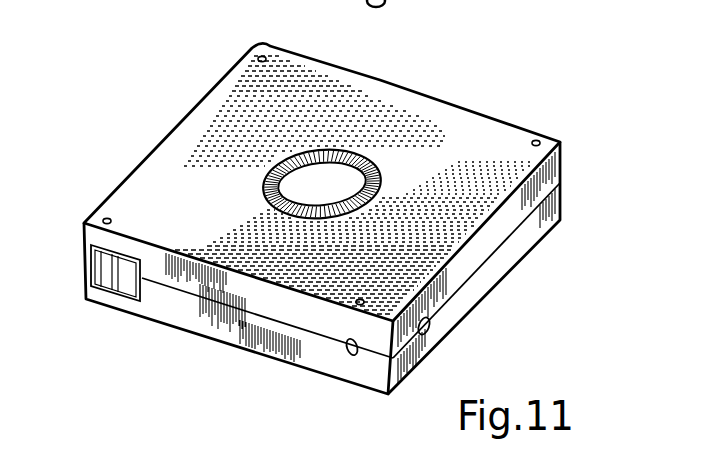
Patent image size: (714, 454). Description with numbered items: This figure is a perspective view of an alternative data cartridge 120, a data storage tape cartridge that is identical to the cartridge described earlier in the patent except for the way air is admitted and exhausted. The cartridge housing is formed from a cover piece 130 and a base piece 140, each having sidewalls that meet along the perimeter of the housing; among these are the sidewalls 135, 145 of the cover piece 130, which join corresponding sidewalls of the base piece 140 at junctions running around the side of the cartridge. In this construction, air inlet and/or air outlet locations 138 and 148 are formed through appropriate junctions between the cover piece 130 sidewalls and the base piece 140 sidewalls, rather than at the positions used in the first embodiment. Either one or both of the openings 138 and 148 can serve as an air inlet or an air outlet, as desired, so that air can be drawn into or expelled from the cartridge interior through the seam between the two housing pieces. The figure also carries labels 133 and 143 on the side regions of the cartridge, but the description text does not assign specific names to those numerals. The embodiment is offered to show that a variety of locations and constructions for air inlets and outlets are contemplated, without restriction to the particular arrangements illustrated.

The data cartridge 120 is at (543, 106).
The cover piece 130 is at (241, 336).
The base side wall 133 is at (503, 257).
The sidewall 135 is at (172, 307).
The air inlet and/or air outlet location 138 is at (340, 369).
The base piece 140 is at (439, 118).
The cover side wall (upper band) 143 is at (483, 243).
The sidewall 145 is at (163, 274).
The air inlet and/or air outlet location 148 is at (431, 335).